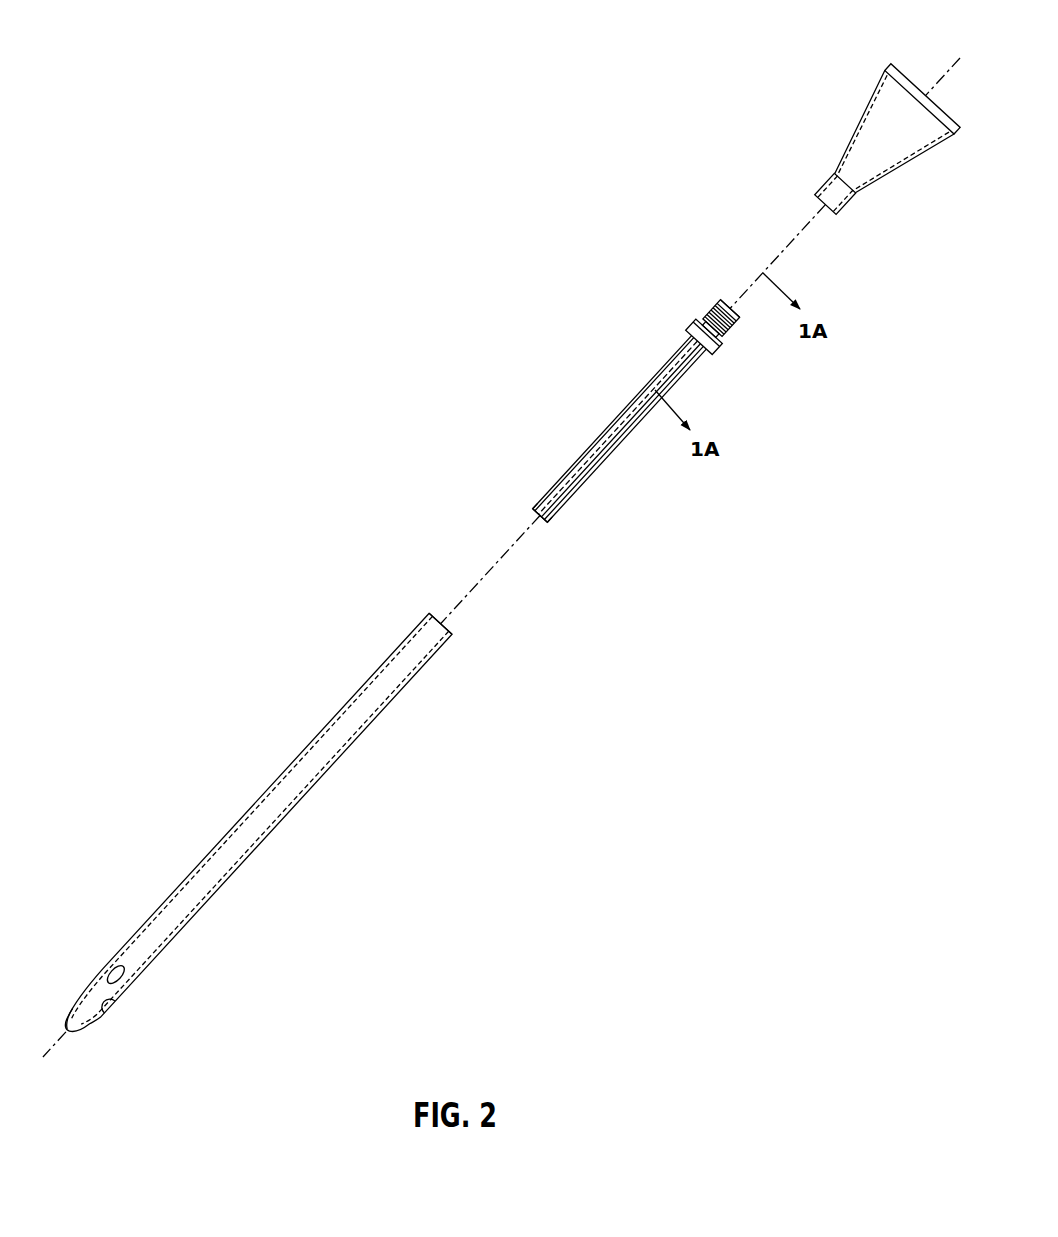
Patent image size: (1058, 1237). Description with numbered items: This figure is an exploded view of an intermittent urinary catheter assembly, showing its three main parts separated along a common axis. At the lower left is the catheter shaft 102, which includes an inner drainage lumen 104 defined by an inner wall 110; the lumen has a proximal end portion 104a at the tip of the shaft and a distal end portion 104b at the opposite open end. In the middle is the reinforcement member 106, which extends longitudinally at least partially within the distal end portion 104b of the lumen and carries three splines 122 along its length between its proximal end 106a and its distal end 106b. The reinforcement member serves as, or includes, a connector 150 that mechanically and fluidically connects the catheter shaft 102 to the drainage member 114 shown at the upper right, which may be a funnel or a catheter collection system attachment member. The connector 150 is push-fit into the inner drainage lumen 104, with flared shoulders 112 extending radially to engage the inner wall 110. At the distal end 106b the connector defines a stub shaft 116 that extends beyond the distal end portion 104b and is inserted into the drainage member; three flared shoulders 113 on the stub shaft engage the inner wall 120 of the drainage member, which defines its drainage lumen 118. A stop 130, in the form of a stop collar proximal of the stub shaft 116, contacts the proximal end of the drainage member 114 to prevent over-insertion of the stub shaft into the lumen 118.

The catheter shaft 102 is at (268, 855).
The inner drainage lumen 104 is at (268, 855).
The proximal end portion of the inner drainage lumen 104a is at (85, 1017).
The distal end portion of the inner drainage lumen 104b is at (430, 635).
The reinforcement member 106 is at (624, 413).
The proximal end of the reinforcement member 106a is at (553, 528).
The distal end of the reinforcement member 106b is at (733, 298).
The inner wall 110 is at (342, 750).
The shoulders 112 is at (700, 343).
The shoulder 113 is at (736, 322).
The drainage member 114 is at (857, 122).
The stub shaft 116 is at (705, 325).
The drainage lumen 118 is at (930, 85).
The inner wall 120 is at (843, 130).
The spline 122 is at (605, 432).
The stop 130 is at (698, 322).
The connector 150 is at (640, 413).